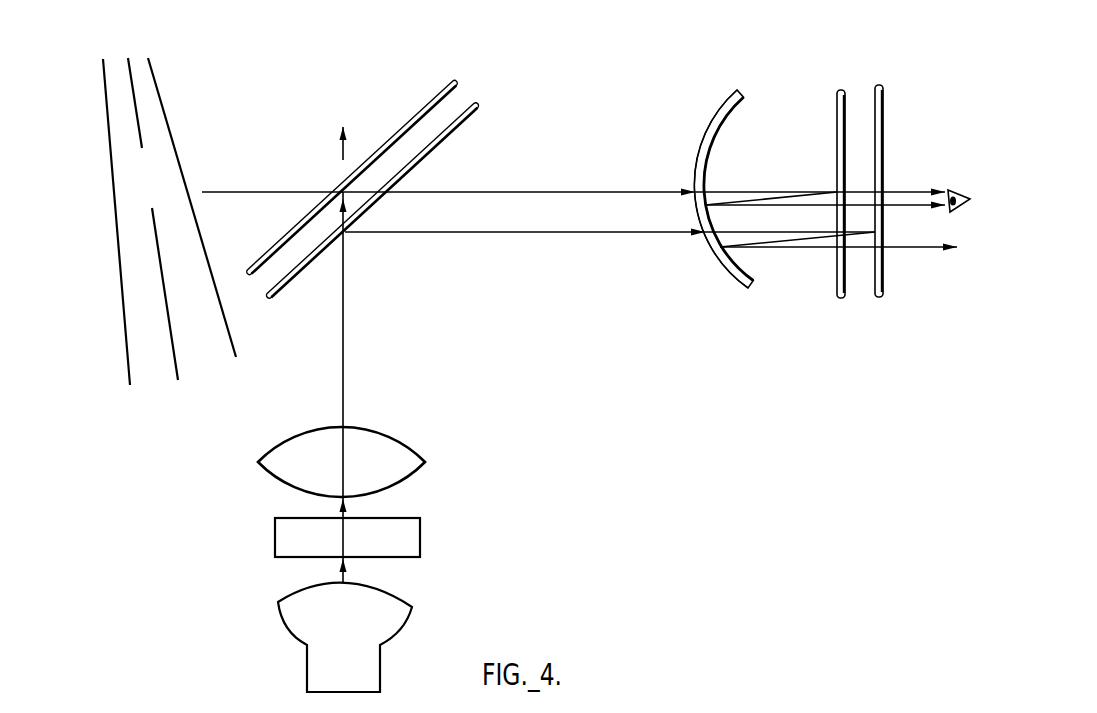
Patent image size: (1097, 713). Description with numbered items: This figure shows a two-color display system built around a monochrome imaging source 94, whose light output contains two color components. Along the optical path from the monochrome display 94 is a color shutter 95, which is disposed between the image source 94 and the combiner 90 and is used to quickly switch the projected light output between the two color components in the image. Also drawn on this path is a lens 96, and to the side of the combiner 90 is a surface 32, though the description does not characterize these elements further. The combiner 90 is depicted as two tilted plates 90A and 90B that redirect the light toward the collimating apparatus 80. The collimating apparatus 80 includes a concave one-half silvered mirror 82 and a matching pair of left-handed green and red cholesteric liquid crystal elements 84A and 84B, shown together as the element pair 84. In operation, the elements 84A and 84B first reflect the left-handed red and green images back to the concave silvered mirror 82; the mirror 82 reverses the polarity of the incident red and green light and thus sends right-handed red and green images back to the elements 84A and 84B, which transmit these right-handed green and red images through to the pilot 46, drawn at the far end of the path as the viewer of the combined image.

The substrate / wafer surface 32 is at (134, 57).
The combiner 90 is at (389, 177).
The beam splitter plate 90A is at (478, 104).
The beam splitter plate 90B is at (459, 84).
The collimating apparatus 80 is at (813, 217).
The concave one-half silvered mirror 82 is at (729, 88).
The plate assembly 84 is at (862, 225).
The left-handed cholesteric liquid crystal element 84A is at (880, 298).
The left-handed cholesteric liquid crystal element 84B is at (842, 298).
The pilot 46 is at (961, 186).
The condenser lens 96 is at (397, 438).
The color shutter 95 is at (403, 517).
The monochrome imaging source 94 is at (402, 598).